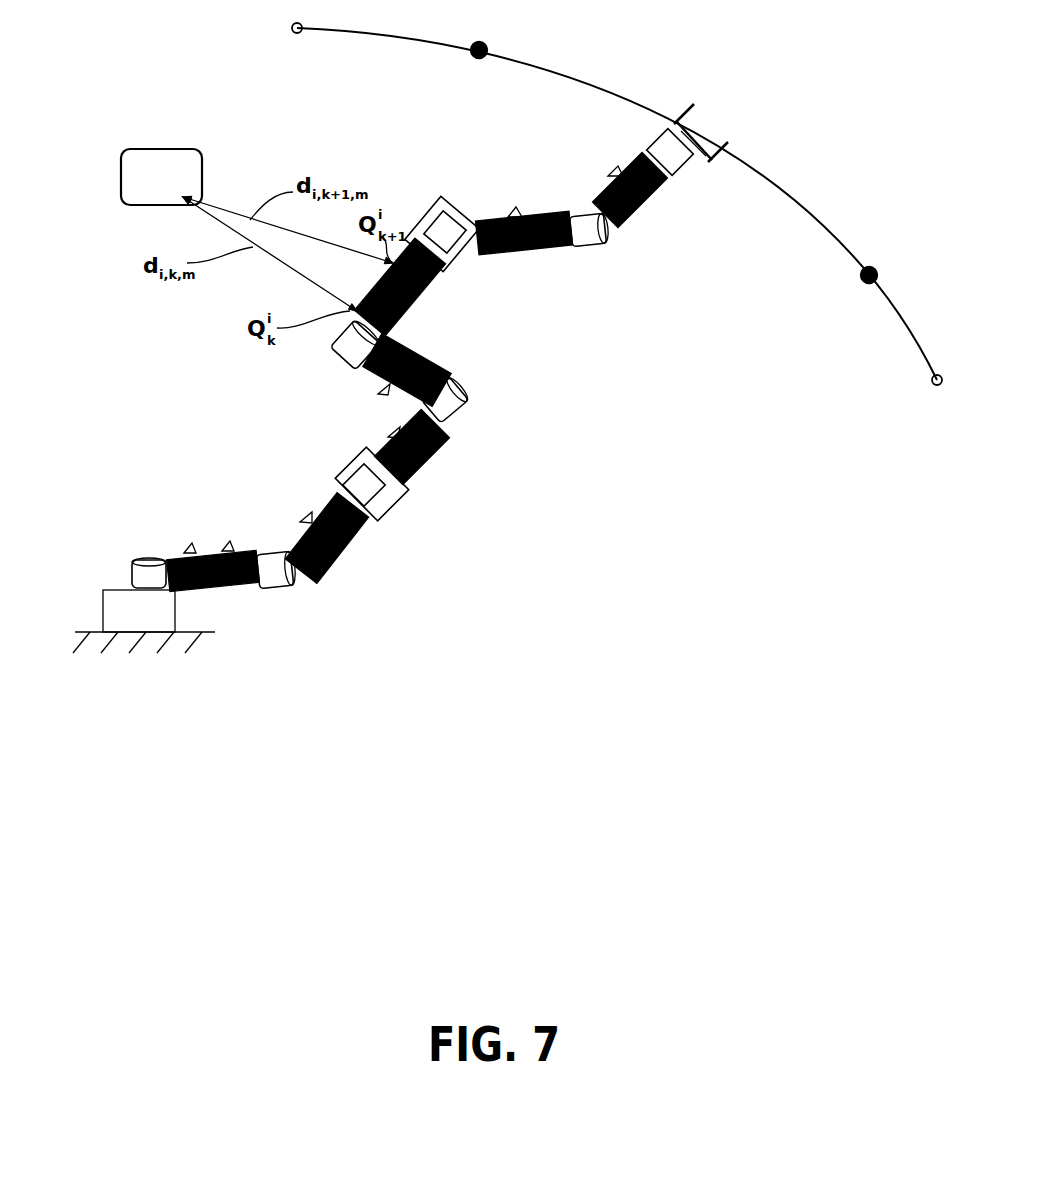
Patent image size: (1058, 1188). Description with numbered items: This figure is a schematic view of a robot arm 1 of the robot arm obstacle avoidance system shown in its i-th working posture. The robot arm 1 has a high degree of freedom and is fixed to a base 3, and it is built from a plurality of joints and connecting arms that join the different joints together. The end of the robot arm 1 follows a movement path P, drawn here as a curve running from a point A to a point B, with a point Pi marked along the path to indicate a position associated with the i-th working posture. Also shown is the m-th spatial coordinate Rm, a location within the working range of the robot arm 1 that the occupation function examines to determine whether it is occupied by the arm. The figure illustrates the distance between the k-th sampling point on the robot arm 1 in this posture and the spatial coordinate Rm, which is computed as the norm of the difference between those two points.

The robot arm 1 is at (440, 462).
The base 3 is at (132, 610).
The movement path P is at (813, 215).
The start point A is at (281, 25).
The end point B is at (944, 396).
The path point i Pi is at (488, 37).
The m-th spatial coordinate Rm is at (203, 170).